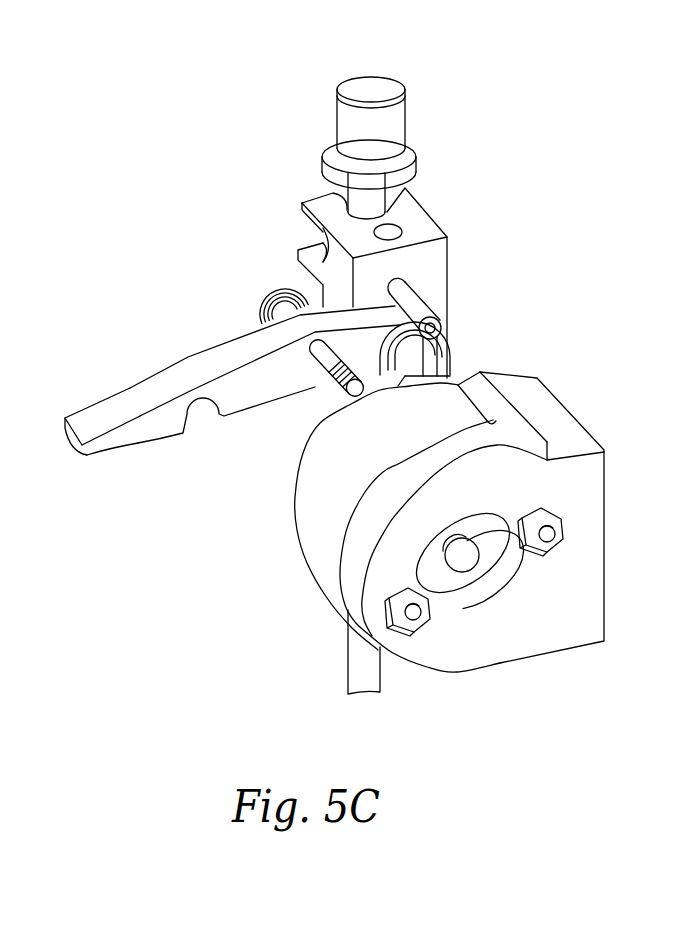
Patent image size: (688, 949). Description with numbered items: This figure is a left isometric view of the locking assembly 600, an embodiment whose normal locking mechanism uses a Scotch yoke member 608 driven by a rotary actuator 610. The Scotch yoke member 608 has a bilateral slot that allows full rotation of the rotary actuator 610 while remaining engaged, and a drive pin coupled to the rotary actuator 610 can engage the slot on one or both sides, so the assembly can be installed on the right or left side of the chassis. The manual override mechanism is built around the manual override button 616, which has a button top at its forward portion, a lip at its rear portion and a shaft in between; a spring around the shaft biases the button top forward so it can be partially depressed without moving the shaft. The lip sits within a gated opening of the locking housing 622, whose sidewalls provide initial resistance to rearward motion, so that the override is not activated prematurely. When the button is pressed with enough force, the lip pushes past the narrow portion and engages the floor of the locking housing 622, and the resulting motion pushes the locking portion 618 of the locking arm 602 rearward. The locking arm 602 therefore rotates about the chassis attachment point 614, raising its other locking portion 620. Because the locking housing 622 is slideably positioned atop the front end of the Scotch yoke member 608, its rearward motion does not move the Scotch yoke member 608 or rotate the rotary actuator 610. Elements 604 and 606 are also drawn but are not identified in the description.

The locking assembly 600 is at (128, 88).
The locking arm 602 is at (147, 328).
The lever arm notch 604 is at (200, 408).
The strap / band 606 is at (360, 660).
The Scotch yoke member 608 is at (290, 437).
The rotary actuator 610 is at (446, 402).
The chassis attachment point 614 is at (272, 285).
The manual override button 616 is at (352, 128).
The locking portion of the locking arm 618 is at (82, 418).
The locking portion of the locking arm 620 is at (367, 313).
The locking housing 622 is at (432, 250).